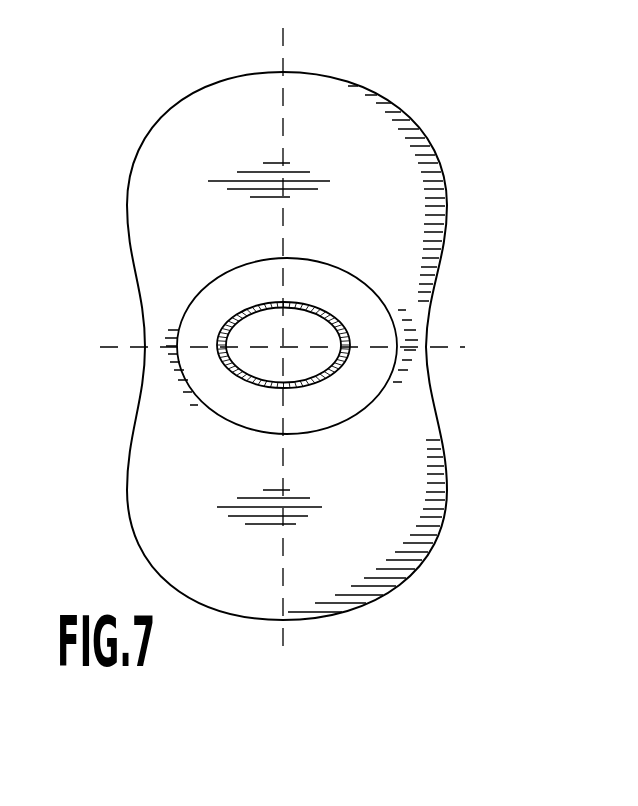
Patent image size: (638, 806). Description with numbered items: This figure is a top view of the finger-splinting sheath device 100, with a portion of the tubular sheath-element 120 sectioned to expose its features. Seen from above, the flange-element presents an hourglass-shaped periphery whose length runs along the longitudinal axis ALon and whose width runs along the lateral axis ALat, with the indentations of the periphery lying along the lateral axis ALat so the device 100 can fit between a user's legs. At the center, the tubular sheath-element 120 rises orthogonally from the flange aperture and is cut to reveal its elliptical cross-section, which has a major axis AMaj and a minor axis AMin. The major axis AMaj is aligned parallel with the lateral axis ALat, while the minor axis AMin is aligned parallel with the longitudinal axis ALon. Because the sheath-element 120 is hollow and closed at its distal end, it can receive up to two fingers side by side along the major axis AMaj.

The finger-splinting sheath device 100 is at (103, 268).
The tubular sheath-element 120 is at (237, 380).
The longitudinal axis ALon is at (290, 328).
The lateral axis ALat is at (313, 348).
The minor axis AMin is at (255, 329).
The major axis AMaj is at (299, 316).